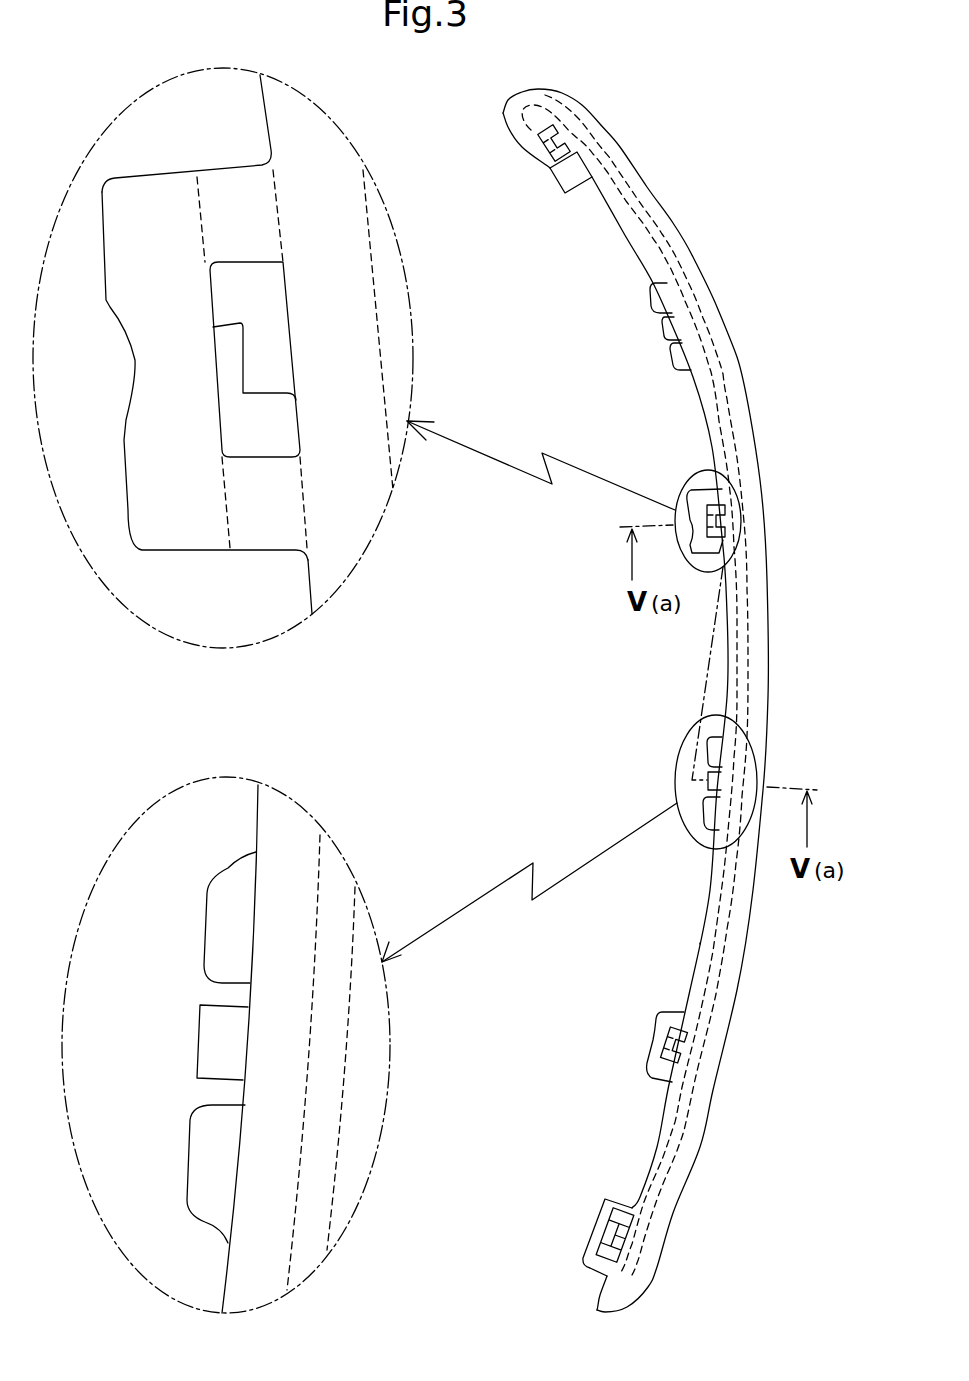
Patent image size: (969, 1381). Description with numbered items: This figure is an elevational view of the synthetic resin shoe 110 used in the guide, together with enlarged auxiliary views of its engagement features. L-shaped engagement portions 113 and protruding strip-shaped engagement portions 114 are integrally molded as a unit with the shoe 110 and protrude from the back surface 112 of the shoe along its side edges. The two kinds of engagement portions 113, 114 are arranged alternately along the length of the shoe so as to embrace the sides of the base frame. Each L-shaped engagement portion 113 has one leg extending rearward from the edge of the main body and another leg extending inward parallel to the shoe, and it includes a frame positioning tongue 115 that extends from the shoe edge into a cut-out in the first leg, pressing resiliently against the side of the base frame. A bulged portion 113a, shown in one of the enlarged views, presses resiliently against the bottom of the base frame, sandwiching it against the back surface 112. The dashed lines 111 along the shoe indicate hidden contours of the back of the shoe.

The shoe 110 is at (684, 213).
The groove 111 is at (732, 980).
The back surface 112 is at (700, 943).
The L-shaped engagement portion 113 is at (562, 170).
The bulged portion 113a is at (230, 360).
The strip-shaped engagement portion 114 is at (657, 298).
The frame positioning tongue 115 is at (265, 373).